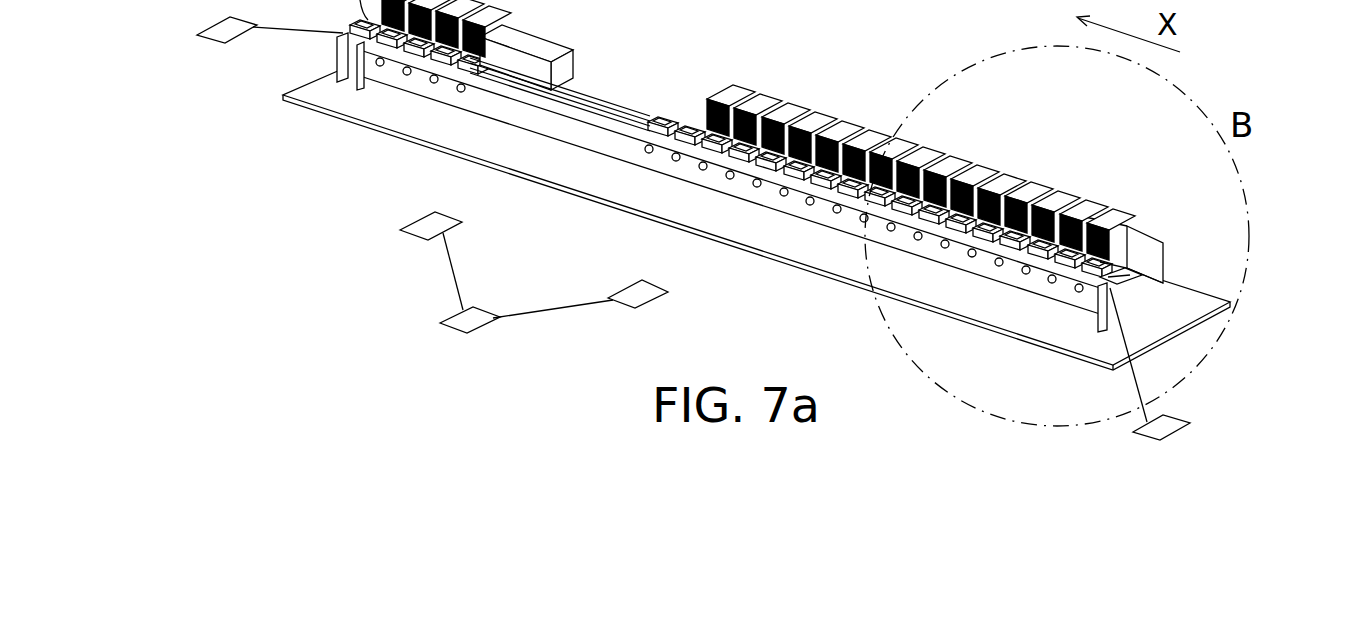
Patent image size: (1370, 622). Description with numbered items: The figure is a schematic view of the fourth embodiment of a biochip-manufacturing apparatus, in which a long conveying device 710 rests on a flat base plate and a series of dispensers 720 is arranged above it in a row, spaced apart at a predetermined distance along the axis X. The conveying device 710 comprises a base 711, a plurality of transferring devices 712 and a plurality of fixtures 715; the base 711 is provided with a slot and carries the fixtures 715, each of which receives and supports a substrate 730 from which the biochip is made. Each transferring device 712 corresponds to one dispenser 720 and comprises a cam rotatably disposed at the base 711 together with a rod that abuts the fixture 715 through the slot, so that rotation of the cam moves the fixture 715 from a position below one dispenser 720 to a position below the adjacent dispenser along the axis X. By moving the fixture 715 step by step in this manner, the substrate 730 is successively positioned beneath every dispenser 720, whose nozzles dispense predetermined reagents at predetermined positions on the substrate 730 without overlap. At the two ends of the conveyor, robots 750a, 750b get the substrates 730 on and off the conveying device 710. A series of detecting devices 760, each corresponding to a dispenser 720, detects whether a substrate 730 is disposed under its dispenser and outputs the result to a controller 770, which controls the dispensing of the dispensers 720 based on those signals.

The conveying device 710 is at (1125, 306).
The base 711 is at (1123, 272).
The transferring device 712 is at (1078, 294).
The fixture 715 is at (1150, 250).
The dispenser 720 is at (1078, 232).
The substrate 730 is at (1147, 237).
The robot 750a is at (1190, 423).
The robot 750b is at (210, 30).
The detecting device 760 is at (412, 226).
The controller 770 is at (448, 320).